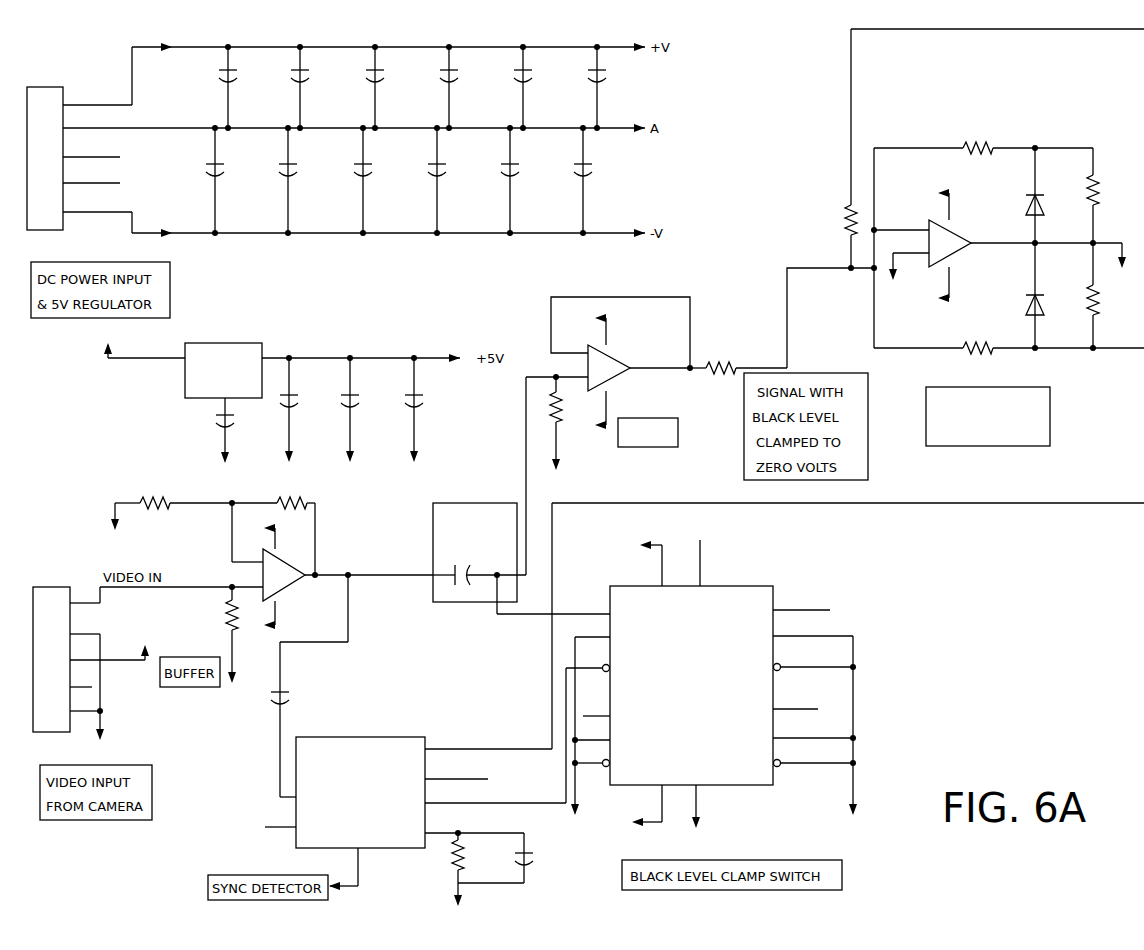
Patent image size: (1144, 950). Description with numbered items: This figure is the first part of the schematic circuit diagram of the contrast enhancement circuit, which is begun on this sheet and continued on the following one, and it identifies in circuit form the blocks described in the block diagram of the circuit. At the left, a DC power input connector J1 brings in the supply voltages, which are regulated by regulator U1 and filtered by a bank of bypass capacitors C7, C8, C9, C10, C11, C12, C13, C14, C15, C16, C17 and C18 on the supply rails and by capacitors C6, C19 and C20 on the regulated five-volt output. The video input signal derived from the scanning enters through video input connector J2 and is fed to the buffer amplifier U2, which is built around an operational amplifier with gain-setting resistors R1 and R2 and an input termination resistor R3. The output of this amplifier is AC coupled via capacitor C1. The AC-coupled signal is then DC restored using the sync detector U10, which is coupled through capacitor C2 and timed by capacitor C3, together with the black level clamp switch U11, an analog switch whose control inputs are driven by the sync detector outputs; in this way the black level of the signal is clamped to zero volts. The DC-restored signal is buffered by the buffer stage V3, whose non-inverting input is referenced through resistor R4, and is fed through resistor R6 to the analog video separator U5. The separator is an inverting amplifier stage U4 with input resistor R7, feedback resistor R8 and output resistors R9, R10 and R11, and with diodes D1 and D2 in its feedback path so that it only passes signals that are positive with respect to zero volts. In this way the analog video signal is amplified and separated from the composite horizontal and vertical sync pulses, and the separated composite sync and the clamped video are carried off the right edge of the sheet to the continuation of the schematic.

The DC power input connector J1 is at (107, 148).
The video input connector J2 is at (89, 664).
The amplifier U1 is at (166, 719).
The sync detector U2 is at (157, 881).
The buffer op-amp V3 is at (652, 458).
The switch U4 is at (730, 848).
The inverting amplifier U5 is at (980, 455).
The sync detector IC U10 is at (704, 696).
The clamp switch IC H1-201H8 U11 is at (713, 695).
The resistor 2K R1 is at (171, 515).
The resistor 2K R2 is at (275, 526).
The resistor 75R R3 is at (209, 644).
The resistor R4 is at (546, 434).
The resistor 2K R6 is at (782, 321).
The resistor 2K R7 is at (978, 150).
The resistor 2K R8 is at (983, 140).
The resistor 2K R9 is at (1009, 358).
The resistor 2K R10 is at (1106, 197).
The resistor 2K R11 is at (1106, 297).
The capacitor C1 is at (521, 558).
The capacitor 0.1uF C2 is at (309, 686).
The capacitor 0.1uF C3 is at (492, 868).
The capacitor 0.1uF C6 is at (305, 420).
The capacitor 10uF C7 is at (244, 87).
The capacitor 10uF C8 is at (232, 180).
The capacitor 0.1uF C9 is at (316, 87).
The capacitor 0.1uF C10 is at (305, 180).
The capacitor 0.1uF C11 is at (393, 87).
The capacitor 0.1uF C12 is at (380, 180).
The capacitor 0.1uF C13 is at (467, 87).
The capacitor 0.1uF C14 is at (454, 180).
The capacitor 0.1uF C15 is at (541, 87).
The capacitor 0.1uF C16 is at (527, 180).
The capacitor 0.1uF C17 is at (615, 87).
The capacitor 0.1uF C18 is at (600, 180).
The capacitor 0.1uF C19 is at (366, 420).
The capacitor 0.1uF C20 is at (430, 420).
The diode IN914 D1 is at (1003, 195).
The diode IN914 D2 is at (1002, 297).